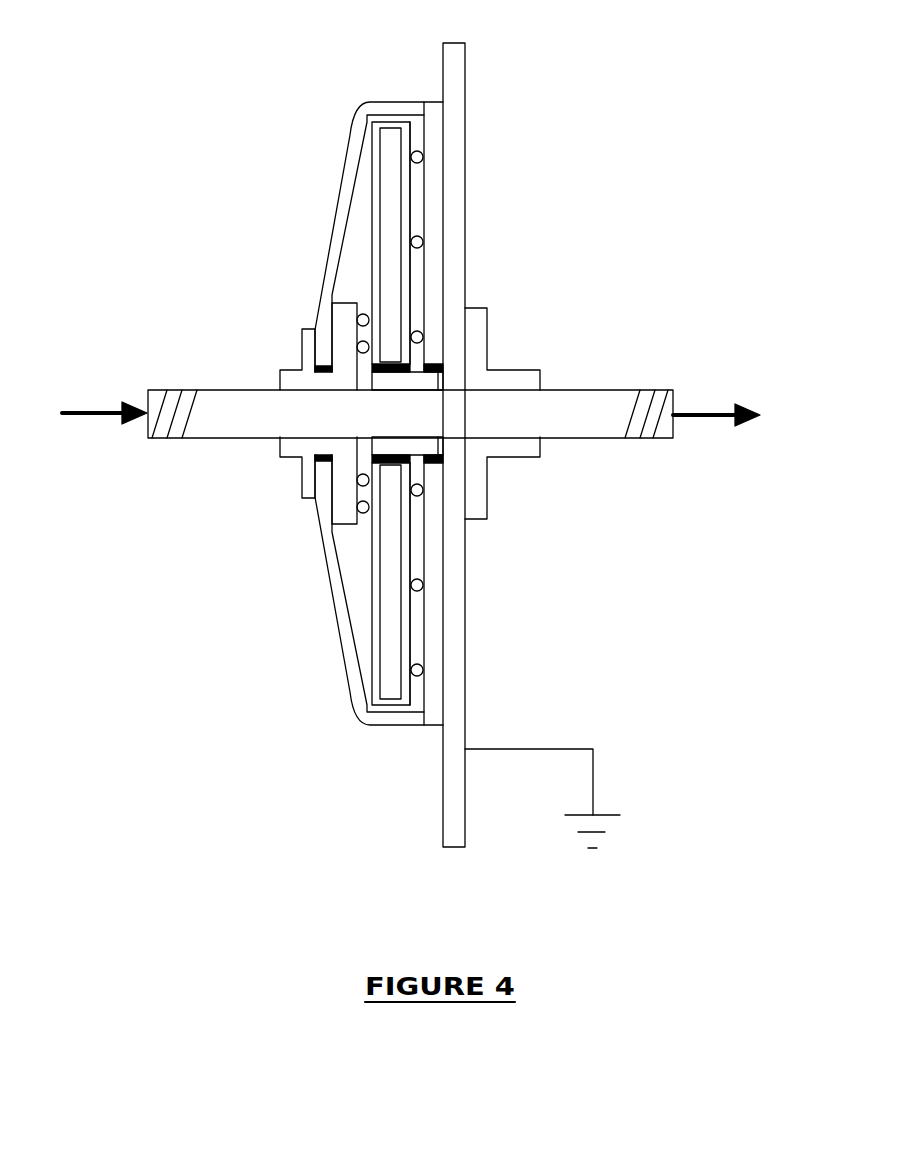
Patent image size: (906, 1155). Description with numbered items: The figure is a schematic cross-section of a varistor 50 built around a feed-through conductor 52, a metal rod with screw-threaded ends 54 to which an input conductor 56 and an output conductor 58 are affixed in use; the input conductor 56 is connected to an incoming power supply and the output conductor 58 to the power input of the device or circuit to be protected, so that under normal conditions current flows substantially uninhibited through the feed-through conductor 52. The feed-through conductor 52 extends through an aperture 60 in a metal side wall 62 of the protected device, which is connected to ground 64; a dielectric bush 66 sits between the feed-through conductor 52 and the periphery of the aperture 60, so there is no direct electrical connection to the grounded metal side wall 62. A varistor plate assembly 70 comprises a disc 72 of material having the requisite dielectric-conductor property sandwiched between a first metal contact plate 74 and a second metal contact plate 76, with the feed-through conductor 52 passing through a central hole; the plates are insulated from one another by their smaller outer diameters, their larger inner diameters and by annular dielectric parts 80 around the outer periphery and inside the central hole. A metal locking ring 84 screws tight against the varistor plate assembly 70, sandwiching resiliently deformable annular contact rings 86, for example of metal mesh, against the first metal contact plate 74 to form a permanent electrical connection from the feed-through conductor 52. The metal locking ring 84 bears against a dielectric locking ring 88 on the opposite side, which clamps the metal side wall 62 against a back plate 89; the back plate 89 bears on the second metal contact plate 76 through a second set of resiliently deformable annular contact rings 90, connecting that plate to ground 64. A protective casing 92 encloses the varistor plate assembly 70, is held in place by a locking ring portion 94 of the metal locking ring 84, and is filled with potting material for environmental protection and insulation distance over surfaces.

The varistor 50 is at (603, 86).
The feed-through conductor 52 is at (576, 396).
The screw-threaded ends 54 is at (168, 403).
The input conductor 56 is at (107, 417).
The output conductor 58 is at (708, 417).
The aperture 60 is at (442, 438).
The metal side wall 62 is at (455, 65).
The ground 64 is at (607, 825).
The dielectric bush 66 is at (375, 443).
The varistor plate assembly 70 is at (362, 158).
The disc 72 is at (388, 202).
The first metal contact plate 74 is at (373, 252).
The second metal contact plate 76 is at (407, 207).
The annular dielectric parts 80 is at (372, 120).
The metal locking ring 84 is at (288, 382).
The resiliently deformable annular contact rings 86 is at (358, 484).
The dielectric locking ring 88 is at (503, 447).
The back plate 89 is at (433, 137).
The second set of resiliently deformable annular contact rings 90 is at (412, 490).
The protective casing 92 is at (330, 567).
The locking ring portion 94 is at (305, 345).